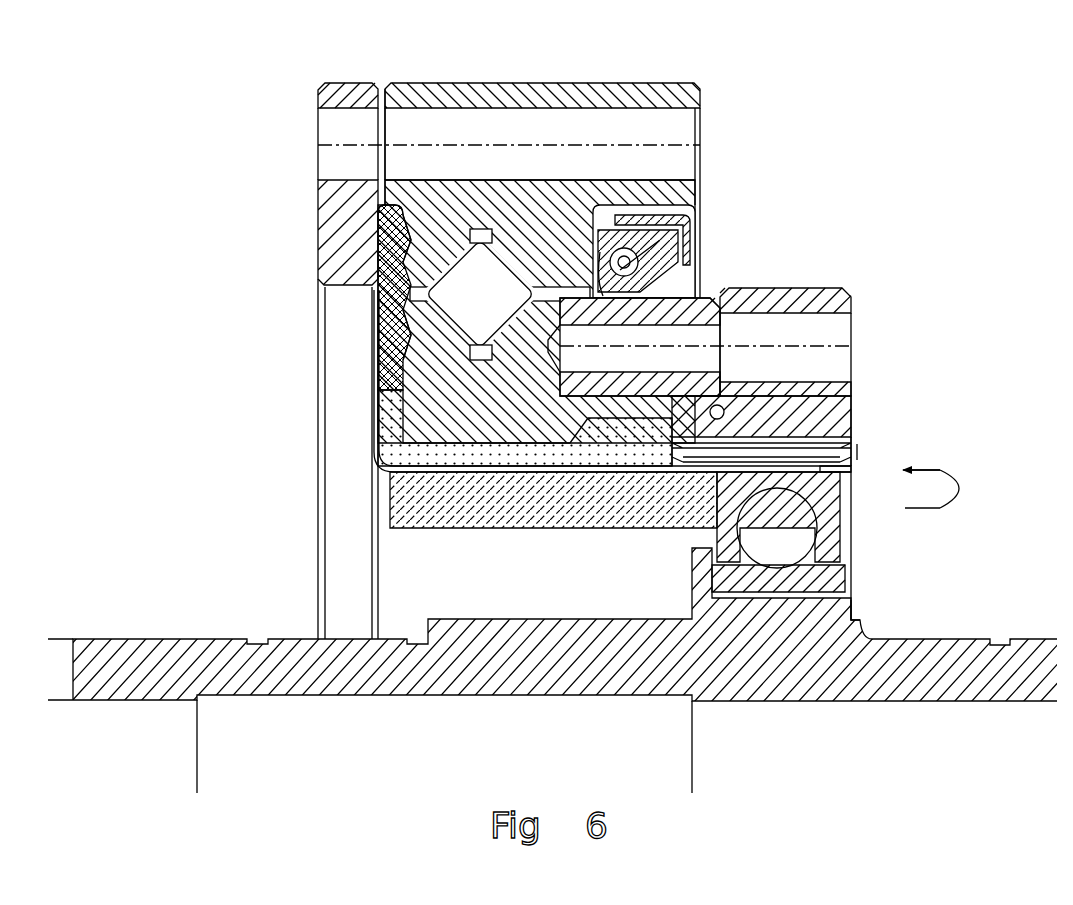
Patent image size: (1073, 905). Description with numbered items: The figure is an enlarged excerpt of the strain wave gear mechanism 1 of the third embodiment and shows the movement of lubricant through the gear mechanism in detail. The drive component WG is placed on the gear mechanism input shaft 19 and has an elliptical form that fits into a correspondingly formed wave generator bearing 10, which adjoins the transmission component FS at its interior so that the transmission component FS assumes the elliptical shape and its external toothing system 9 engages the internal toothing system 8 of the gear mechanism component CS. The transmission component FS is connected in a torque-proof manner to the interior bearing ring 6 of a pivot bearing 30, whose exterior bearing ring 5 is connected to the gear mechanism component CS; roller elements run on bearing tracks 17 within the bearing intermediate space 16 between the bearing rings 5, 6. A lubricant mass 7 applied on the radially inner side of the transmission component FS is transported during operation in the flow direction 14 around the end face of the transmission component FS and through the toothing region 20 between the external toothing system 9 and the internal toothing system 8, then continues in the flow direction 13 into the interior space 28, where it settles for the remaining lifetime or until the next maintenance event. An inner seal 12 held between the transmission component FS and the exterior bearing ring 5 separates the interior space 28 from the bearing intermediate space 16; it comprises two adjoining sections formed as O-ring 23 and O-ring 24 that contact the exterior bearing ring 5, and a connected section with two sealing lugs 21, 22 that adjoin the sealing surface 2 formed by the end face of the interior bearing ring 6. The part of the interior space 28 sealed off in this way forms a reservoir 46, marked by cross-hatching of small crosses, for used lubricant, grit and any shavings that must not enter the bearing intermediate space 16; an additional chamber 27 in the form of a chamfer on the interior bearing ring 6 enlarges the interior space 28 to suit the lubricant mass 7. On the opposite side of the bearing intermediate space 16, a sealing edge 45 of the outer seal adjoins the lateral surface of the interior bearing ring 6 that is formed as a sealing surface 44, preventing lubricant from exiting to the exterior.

The strain wave gear mechanism 1 is at (308, 76).
The sealing surface 2 is at (380, 353).
The exterior bearing ring 5 is at (648, 93).
The interior bearing ring 6 is at (702, 308).
The lubricant mass 7 is at (830, 506).
The internal toothing system 8 is at (832, 446).
The external toothing system 9 is at (842, 472).
The wave generator bearing 10 is at (808, 582).
The inner seal 12 is at (378, 297).
The flow direction 13 is at (777, 396).
The flow direction 14 is at (968, 488).
The bearing intermediate space 16 is at (470, 285).
The bearing tracks 17 is at (510, 245).
The gear mechanism input shaft 19 is at (943, 640).
The toothing region 20 is at (717, 432).
The sealing lug 21 is at (373, 378).
The sealing lug 22 is at (380, 327).
The O-ring 23 is at (383, 255).
The O-ring 24 is at (378, 212).
The additional chamber 27 is at (520, 514).
The interior space 28 is at (455, 462).
The pivot bearing 30 is at (704, 79).
The sealing surface 44 is at (690, 290).
The sealing edge 45 is at (645, 258).
The reservoir 46 is at (630, 452).
The transmission component FS is at (348, 198).
The gear mechanism component CS is at (808, 300).
The drive component WG is at (863, 623).